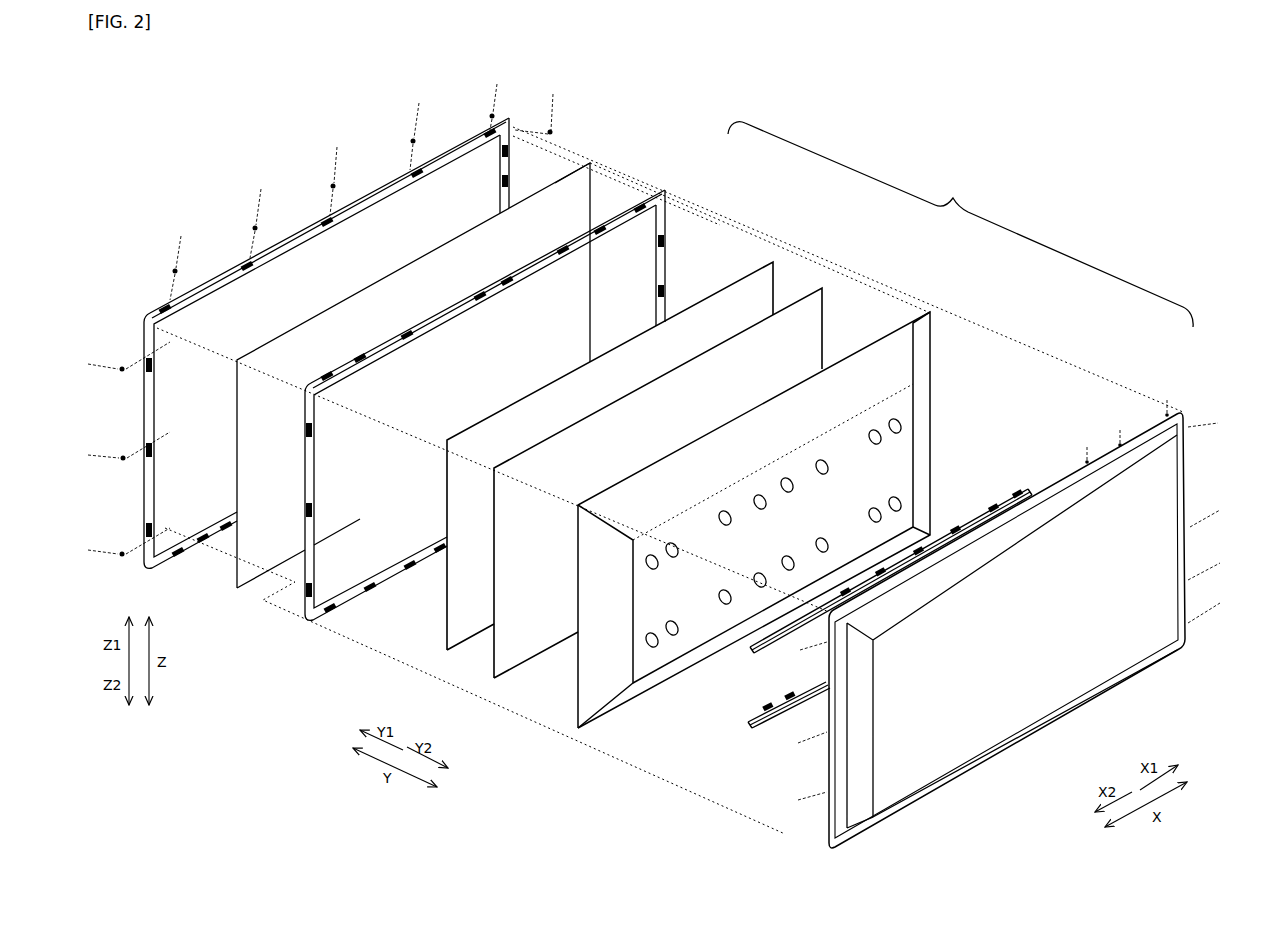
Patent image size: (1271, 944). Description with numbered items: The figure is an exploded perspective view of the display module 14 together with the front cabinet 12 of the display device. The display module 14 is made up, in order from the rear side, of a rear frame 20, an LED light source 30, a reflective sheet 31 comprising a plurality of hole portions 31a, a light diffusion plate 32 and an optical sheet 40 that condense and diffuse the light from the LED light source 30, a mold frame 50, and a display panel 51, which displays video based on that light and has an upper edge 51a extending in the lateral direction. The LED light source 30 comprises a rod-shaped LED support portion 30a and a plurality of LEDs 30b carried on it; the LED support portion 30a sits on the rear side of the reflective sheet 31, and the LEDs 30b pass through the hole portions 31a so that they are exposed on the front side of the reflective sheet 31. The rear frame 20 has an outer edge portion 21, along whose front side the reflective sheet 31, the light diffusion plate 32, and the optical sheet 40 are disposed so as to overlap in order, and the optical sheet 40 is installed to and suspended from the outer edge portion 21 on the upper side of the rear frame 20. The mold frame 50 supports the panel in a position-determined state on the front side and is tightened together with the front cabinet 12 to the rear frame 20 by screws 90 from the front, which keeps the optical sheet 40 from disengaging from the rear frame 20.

The front cabinet 12 is at (352, 212).
The display module 14 is at (960, 224).
The rear frame 20 is at (1178, 415).
The outer edge portion 21 is at (826, 805).
The LED light source 30 is at (1031, 494).
The LED support portion 30a is at (968, 515).
The LEDs 30b is at (1017, 491).
The reflective sheet 31 is at (925, 314).
The hole portions 31a is at (898, 430).
The light diffusion plate 32 is at (818, 292).
The optical sheet 40 is at (768, 268).
The mold frame 50 is at (668, 199).
The display panel 51 is at (600, 173).
The upper edge 51a is at (570, 170).
The screws 90 is at (315, 312).